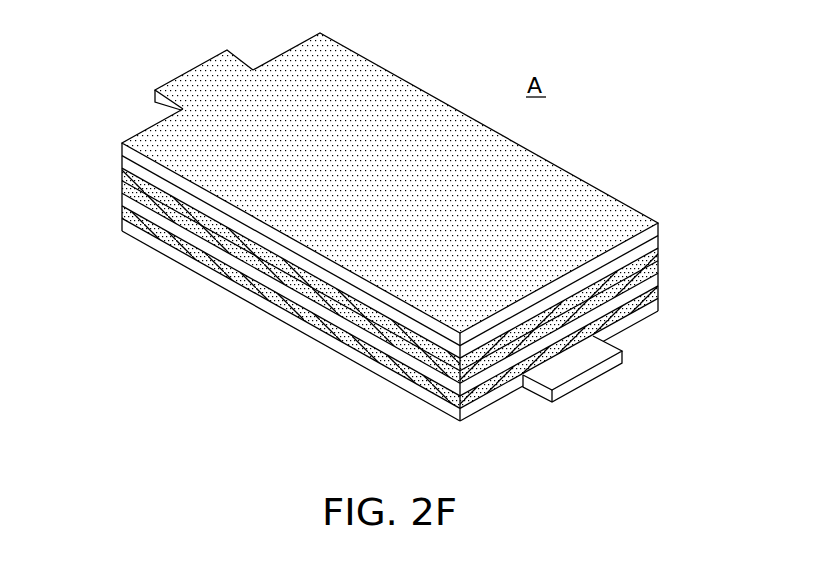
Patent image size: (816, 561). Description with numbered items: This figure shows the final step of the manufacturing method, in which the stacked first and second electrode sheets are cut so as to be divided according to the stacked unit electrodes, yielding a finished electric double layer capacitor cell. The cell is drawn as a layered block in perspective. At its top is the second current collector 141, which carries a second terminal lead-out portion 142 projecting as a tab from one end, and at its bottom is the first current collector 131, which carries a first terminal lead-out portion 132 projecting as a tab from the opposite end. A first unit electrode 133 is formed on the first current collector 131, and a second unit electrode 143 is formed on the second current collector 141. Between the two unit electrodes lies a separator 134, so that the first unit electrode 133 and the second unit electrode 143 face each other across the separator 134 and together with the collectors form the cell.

The first current collector 131 is at (660, 312).
The first terminal lead-out portion 132 is at (585, 377).
The first unit electrode 133 is at (660, 298).
The separator 134 is at (122, 187).
The second current collector 141 is at (128, 137).
The second terminal lead-out portion 142 is at (202, 88).
The second unit electrode 143 is at (122, 167).